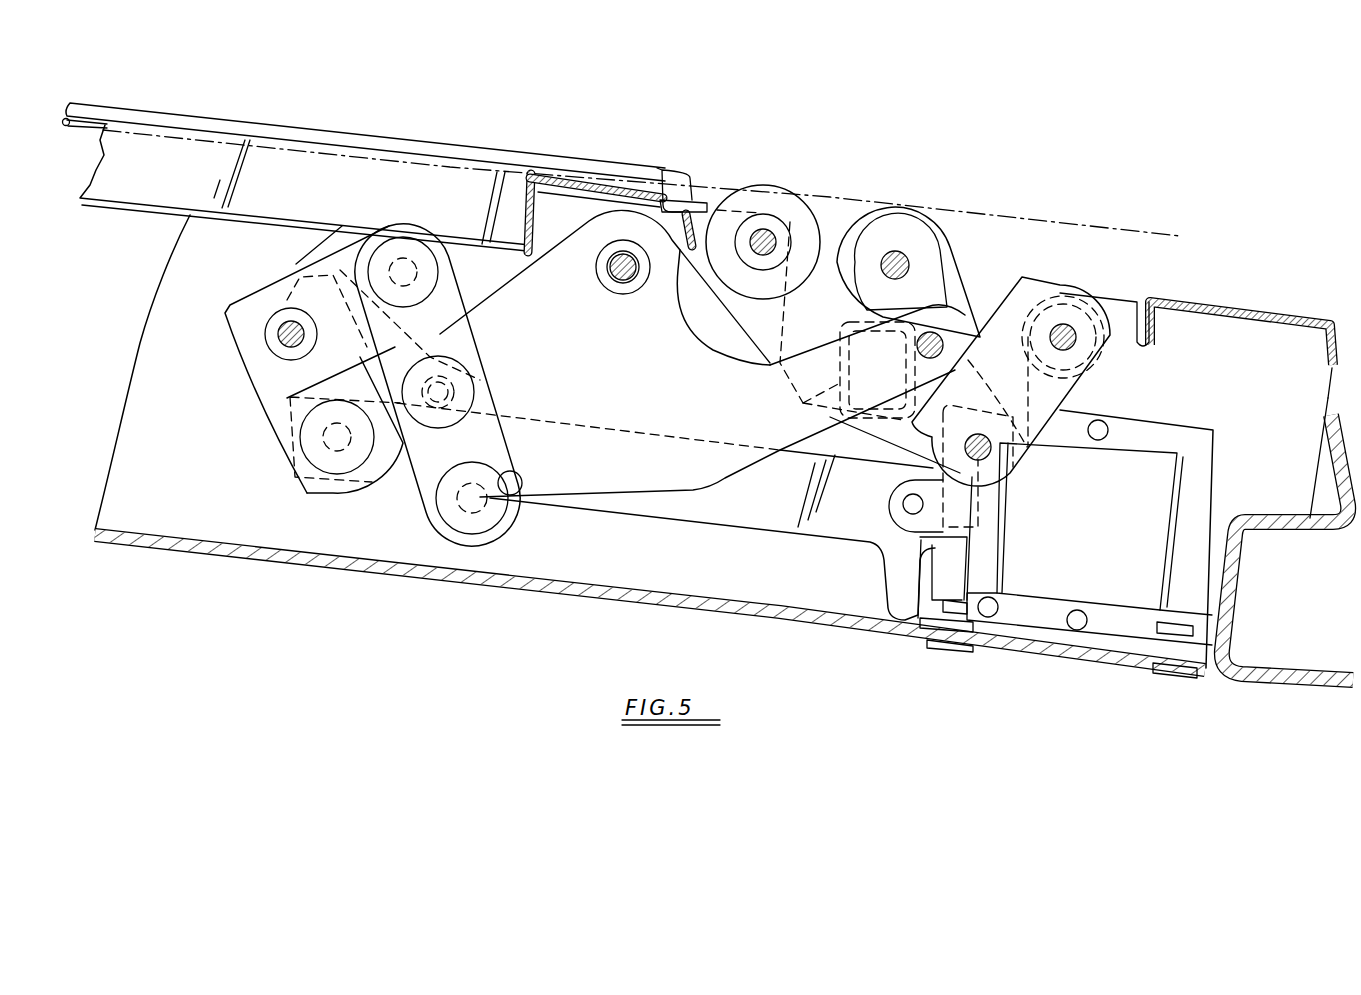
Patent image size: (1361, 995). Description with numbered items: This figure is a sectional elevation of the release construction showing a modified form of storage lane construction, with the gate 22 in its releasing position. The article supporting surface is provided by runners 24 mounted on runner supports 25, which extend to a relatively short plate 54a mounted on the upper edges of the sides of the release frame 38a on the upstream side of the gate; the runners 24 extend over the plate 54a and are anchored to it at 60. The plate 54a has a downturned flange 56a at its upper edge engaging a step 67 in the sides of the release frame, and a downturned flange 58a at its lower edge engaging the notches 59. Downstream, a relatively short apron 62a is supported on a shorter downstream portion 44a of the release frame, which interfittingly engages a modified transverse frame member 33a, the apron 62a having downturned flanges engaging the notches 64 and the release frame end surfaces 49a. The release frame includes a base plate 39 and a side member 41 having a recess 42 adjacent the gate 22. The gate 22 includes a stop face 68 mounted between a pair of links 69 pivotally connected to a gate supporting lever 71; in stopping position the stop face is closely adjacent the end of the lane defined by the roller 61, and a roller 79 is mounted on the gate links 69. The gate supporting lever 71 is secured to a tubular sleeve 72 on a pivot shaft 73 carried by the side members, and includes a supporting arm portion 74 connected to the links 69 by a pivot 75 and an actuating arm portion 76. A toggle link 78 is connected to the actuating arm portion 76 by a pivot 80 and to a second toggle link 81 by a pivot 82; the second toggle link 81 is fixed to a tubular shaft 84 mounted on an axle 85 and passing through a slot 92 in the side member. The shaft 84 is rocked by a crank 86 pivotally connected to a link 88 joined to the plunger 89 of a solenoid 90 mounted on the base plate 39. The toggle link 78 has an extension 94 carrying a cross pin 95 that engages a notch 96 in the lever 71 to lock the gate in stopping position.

The runners 24 is at (226, 112).
The runner supports 25 is at (150, 183).
The side member 41 is at (157, 284).
The release frame 38a is at (140, 378).
The downturned flange 56a is at (530, 175).
The plate 54a is at (600, 182).
The anchorage 60 is at (665, 170).
The downturned flange 58a is at (702, 210).
The step 67 is at (557, 247).
The tubular sleeve 72 is at (613, 282).
The pivot shaft 73 is at (628, 285).
The notches 59 is at (703, 210).
The roller 61 is at (797, 196).
The recess 42 is at (750, 337).
The supporting arm portion 74 is at (820, 348).
The stop face 68 is at (803, 403).
The pivot 75 is at (920, 350).
The roller 79 is at (940, 225).
The gate 22 is at (965, 280).
The links 69 is at (1022, 277).
The gate supporting lever 71 is at (697, 495).
The actuating arm portion 76 is at (492, 297).
The toggle link 78 is at (478, 352).
The second toggle link 81 is at (417, 260).
The pivot 82 is at (423, 257).
The pivot 80 is at (455, 392).
The cross pin 95 is at (500, 522).
The notch 96 is at (522, 483).
The extension 94 is at (517, 457).
The tubular shaft 84 is at (277, 353).
The axle 85 is at (280, 337).
The slot 92 is at (317, 253).
The crank 86 is at (273, 428).
The link 88 is at (583, 503).
The plunger 89 is at (888, 507).
The solenoid 90 is at (1212, 503).
The base plate 39 is at (1033, 662).
The transverse frame member 33a is at (1242, 612).
The apron 62a is at (1260, 297).
The notches 64 is at (1150, 343).
The downstream portion 44a is at (1270, 372).
The end surfaces 49a is at (1323, 400).